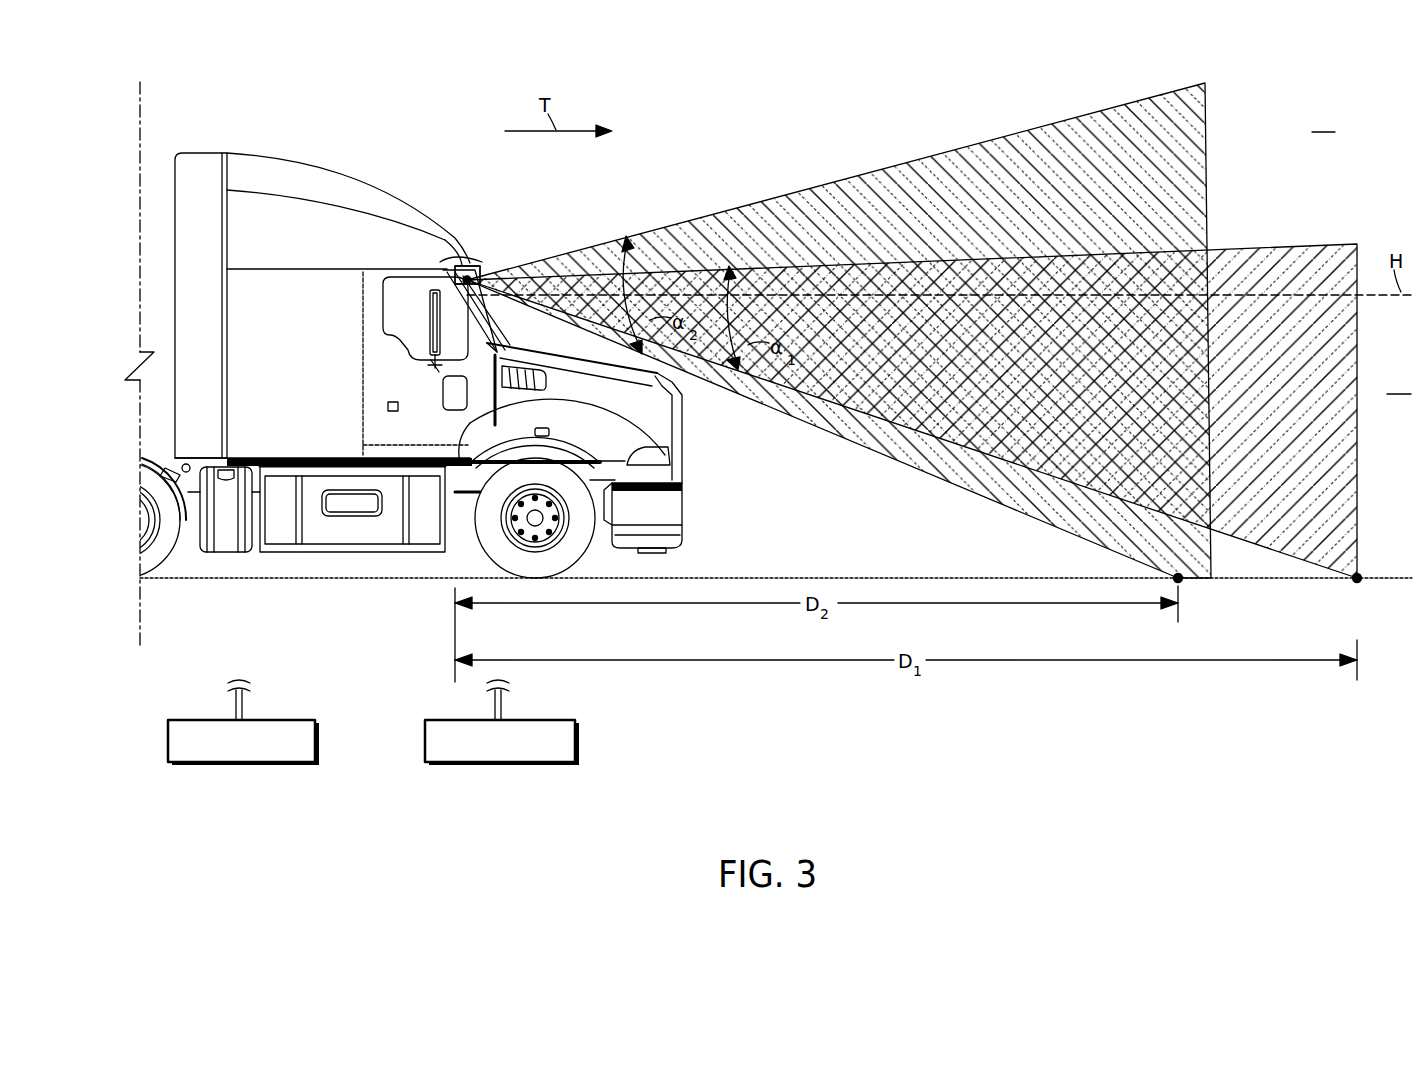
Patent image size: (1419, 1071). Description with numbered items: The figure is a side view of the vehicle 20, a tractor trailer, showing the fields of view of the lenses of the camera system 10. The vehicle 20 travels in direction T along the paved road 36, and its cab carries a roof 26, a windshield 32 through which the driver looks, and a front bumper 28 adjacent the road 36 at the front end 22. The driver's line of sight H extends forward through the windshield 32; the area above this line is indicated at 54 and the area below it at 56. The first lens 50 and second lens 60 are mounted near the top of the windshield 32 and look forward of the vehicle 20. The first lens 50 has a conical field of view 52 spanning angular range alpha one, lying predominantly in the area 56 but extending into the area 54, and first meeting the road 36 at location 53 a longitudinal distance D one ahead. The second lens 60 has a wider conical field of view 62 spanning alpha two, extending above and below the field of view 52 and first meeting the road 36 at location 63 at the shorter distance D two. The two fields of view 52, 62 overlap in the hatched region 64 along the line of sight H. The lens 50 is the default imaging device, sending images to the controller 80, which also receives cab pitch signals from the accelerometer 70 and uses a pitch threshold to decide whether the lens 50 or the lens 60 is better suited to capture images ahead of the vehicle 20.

The camera system 10 is at (498, 262).
The vehicle 20 is at (247, 133).
The front end 22 is at (702, 491).
The roof 26 is at (310, 172).
The front bumper 28 is at (668, 462).
The windshield 32 is at (490, 320).
The paved road 36 is at (369, 616).
The first lens 50 is at (463, 264).
The second lens 60 is at (467, 275).
The field of view 52 is at (1360, 334).
The location 53 is at (1360, 582).
The area above the line of sight 54 is at (1323, 121).
The area below the line of sight 56 is at (1399, 383).
The field of view 62 is at (1208, 131).
The location 63 is at (1181, 582).
The overlap region 64 is at (1185, 264).
The accelerometer 70 is at (168, 742).
The controller 80 is at (425, 742).